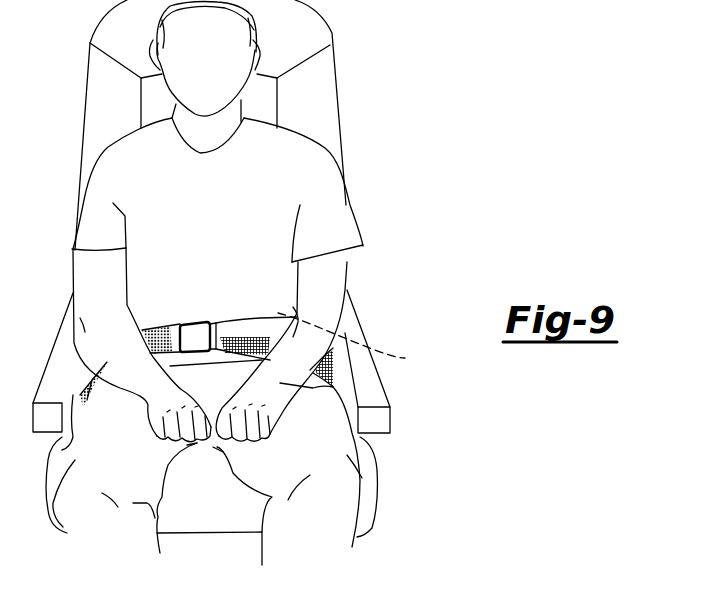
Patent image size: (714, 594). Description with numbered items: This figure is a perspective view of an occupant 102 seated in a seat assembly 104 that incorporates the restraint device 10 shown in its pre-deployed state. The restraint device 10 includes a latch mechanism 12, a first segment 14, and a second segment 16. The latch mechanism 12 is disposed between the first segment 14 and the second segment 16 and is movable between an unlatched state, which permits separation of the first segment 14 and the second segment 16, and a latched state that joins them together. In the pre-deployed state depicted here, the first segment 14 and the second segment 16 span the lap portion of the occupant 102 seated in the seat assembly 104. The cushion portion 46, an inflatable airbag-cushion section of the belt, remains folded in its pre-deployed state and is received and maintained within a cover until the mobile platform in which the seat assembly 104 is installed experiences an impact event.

The restraint device 10 is at (217, 318).
The latch mechanism 12 is at (193, 320).
The first segment 14 is at (153, 327).
The second segment 16 is at (262, 318).
The cushion portion 46 is at (352, 350).
The occupant 102 is at (332, 213).
The seat assembly 104 is at (325, 93).